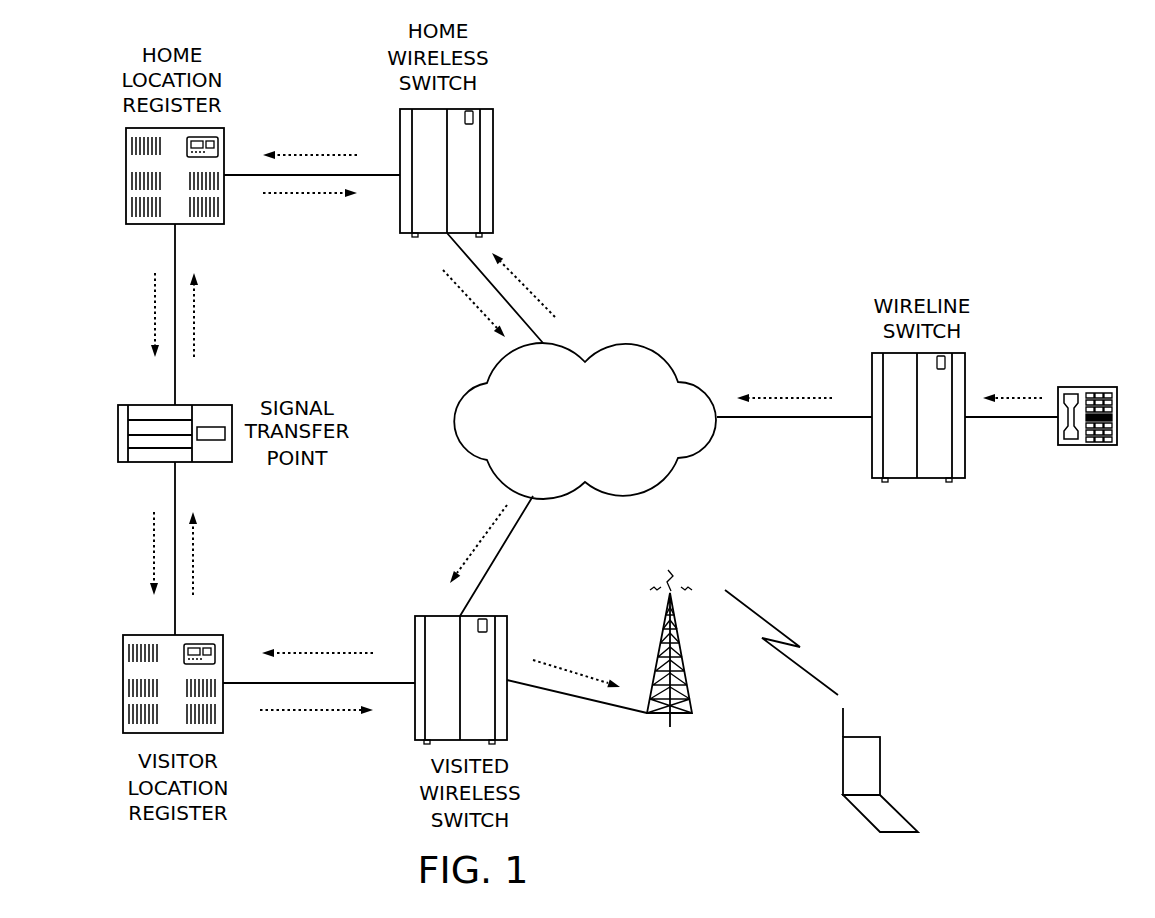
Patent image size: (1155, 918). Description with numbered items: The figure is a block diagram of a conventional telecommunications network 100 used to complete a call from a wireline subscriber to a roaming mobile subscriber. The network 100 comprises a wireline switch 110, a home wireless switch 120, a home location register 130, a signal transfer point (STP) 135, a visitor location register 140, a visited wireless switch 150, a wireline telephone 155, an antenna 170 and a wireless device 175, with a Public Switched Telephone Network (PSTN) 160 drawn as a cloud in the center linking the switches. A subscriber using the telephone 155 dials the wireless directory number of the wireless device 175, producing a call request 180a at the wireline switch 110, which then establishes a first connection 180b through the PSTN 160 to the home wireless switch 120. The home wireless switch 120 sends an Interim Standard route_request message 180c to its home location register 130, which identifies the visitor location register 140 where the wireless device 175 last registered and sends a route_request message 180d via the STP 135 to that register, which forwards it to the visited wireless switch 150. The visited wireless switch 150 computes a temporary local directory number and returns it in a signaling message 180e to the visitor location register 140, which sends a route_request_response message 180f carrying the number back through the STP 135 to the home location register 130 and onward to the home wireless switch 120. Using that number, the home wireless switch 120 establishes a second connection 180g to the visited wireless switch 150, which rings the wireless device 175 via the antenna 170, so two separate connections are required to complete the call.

The telecommunications network 100 is at (825, 125).
The wireline switch 110 is at (908, 478).
The home wireless switch 120 is at (493, 163).
The home location register 130 is at (126, 183).
The signal transfer point (STP) 135 is at (118, 433).
The visitor location register 140 is at (123, 687).
The visited wireless switch 150 is at (503, 613).
The wireline telephone 155 is at (1083, 445).
The Public Switched Telephone Network (PSTN) 160 is at (652, 348).
The antenna 170 is at (670, 727).
The wireless device 175 is at (895, 833).
The call request 180a is at (1013, 398).
The first connection 180b is at (527, 288).
The IS-41 route_request message 180c is at (307, 157).
The IS-41 route_request message 180d is at (155, 312).
The IS-41 message 180e is at (313, 652).
The IS-41 route_request_response message 180f is at (288, 195).
The second connection 180g is at (472, 302).